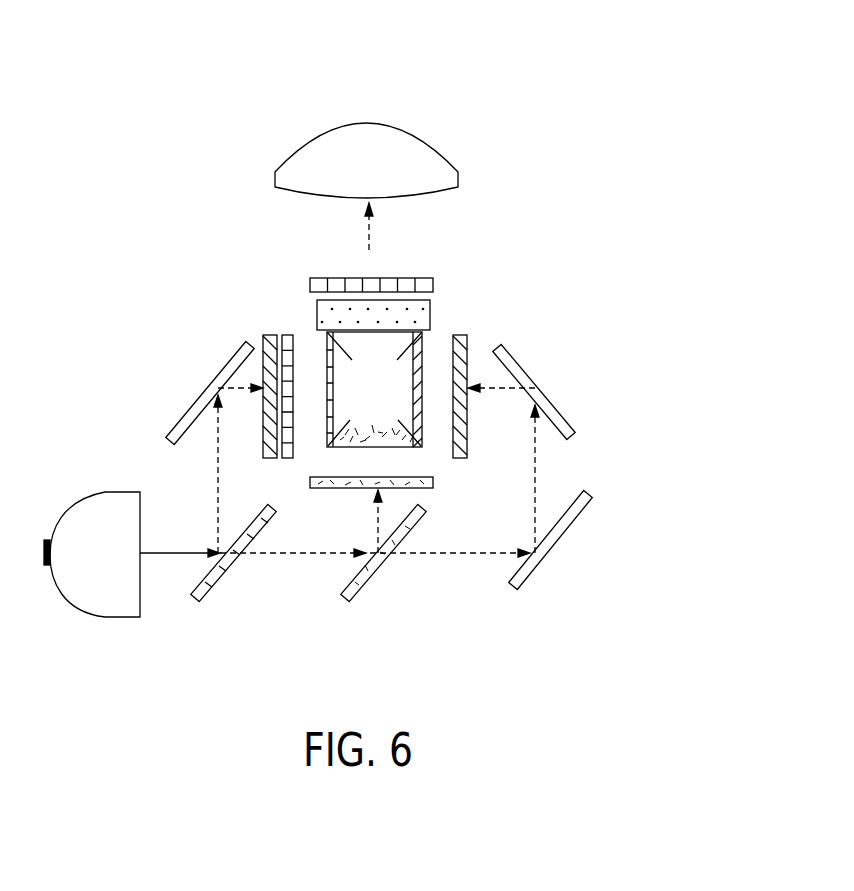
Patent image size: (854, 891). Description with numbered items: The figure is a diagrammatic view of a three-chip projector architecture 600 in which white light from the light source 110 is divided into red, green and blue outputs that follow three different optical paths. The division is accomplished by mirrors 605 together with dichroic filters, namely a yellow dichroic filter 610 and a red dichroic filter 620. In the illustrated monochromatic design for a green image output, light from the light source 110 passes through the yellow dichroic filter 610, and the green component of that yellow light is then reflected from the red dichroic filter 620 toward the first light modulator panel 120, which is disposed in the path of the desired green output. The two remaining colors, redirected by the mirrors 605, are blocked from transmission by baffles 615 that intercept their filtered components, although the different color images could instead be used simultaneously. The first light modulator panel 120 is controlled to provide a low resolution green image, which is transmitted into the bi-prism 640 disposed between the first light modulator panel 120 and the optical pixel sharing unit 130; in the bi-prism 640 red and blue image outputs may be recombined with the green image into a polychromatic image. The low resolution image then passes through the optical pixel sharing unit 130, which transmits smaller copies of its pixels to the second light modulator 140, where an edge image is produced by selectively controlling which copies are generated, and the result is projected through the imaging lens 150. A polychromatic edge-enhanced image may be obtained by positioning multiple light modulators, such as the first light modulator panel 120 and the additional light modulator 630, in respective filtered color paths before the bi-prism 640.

The 3-chip projector architecture 600 is at (138, 77).
The imaging lens 150 is at (420, 130).
The second light modulator 140 is at (418, 278).
The optical pixel sharing unit 130 is at (318, 318).
The bi-prism 640 is at (417, 360).
The light modulator 630 is at (287, 335).
The baffles 615 is at (270, 335).
The mirrors 605 is at (186, 424).
The light source 110 is at (93, 617).
The first light modulator panel 120 is at (433, 483).
The yellow dichroic filter 610 is at (277, 518).
The red dichroic filter 620 is at (427, 518).